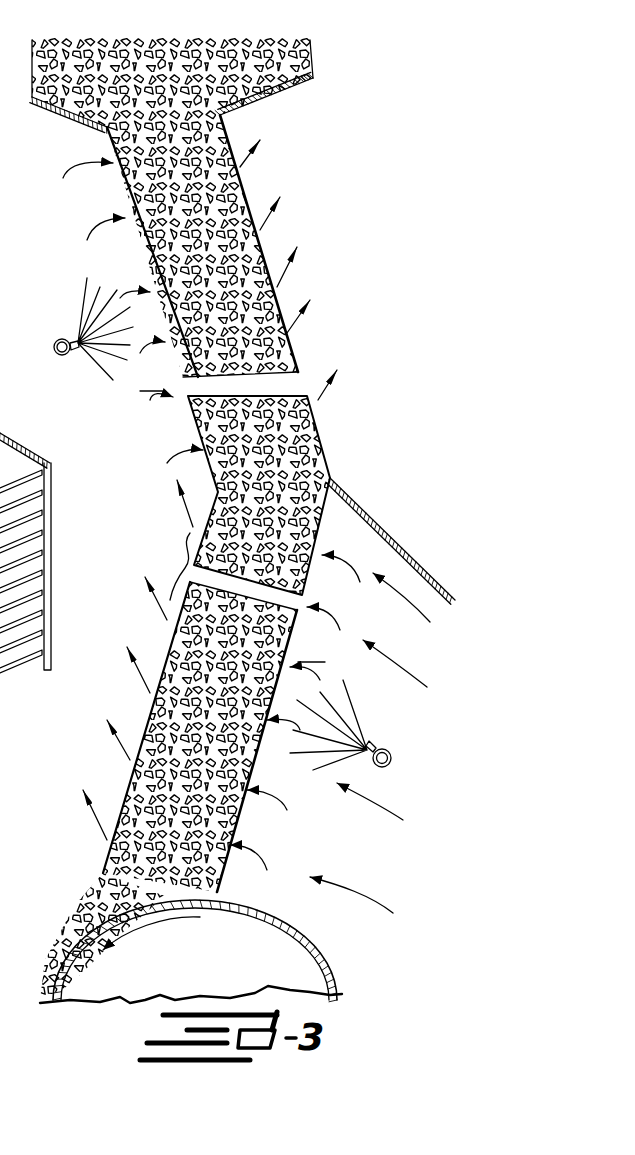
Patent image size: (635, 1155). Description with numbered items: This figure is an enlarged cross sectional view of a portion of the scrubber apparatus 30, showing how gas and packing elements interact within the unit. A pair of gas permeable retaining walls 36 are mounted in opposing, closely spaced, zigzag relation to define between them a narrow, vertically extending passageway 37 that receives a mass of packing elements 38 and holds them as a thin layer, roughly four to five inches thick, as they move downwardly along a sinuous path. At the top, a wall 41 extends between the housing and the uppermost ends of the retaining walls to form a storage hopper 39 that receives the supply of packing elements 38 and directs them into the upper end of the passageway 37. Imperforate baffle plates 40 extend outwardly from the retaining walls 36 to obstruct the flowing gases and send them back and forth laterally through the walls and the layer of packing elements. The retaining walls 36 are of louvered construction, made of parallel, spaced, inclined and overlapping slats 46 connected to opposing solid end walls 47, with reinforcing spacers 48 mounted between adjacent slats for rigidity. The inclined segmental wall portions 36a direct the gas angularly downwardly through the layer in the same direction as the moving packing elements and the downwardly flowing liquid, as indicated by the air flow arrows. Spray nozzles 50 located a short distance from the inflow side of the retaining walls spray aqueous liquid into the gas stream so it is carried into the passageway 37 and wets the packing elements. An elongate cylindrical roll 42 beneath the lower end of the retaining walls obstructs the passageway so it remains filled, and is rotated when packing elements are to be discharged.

The aggregate handling apparatus 30 is at (363, 377).
The retaining walls 36 is at (250, 200).
The segmental wall portions 36a is at (306, 391).
The passageway 37 is at (258, 241).
The packing elements 38 is at (180, 38).
The storage hopper 39 is at (362, 22).
The baffle plates 40 is at (422, 565).
The wall 41 is at (248, 110).
The cylindrical roll 42 is at (314, 942).
The slats 46 is at (128, 199).
The end walls 47 is at (330, 437).
The reinforcing spacers 48 is at (10, 672).
The spray nozzles 50 is at (76, 341).